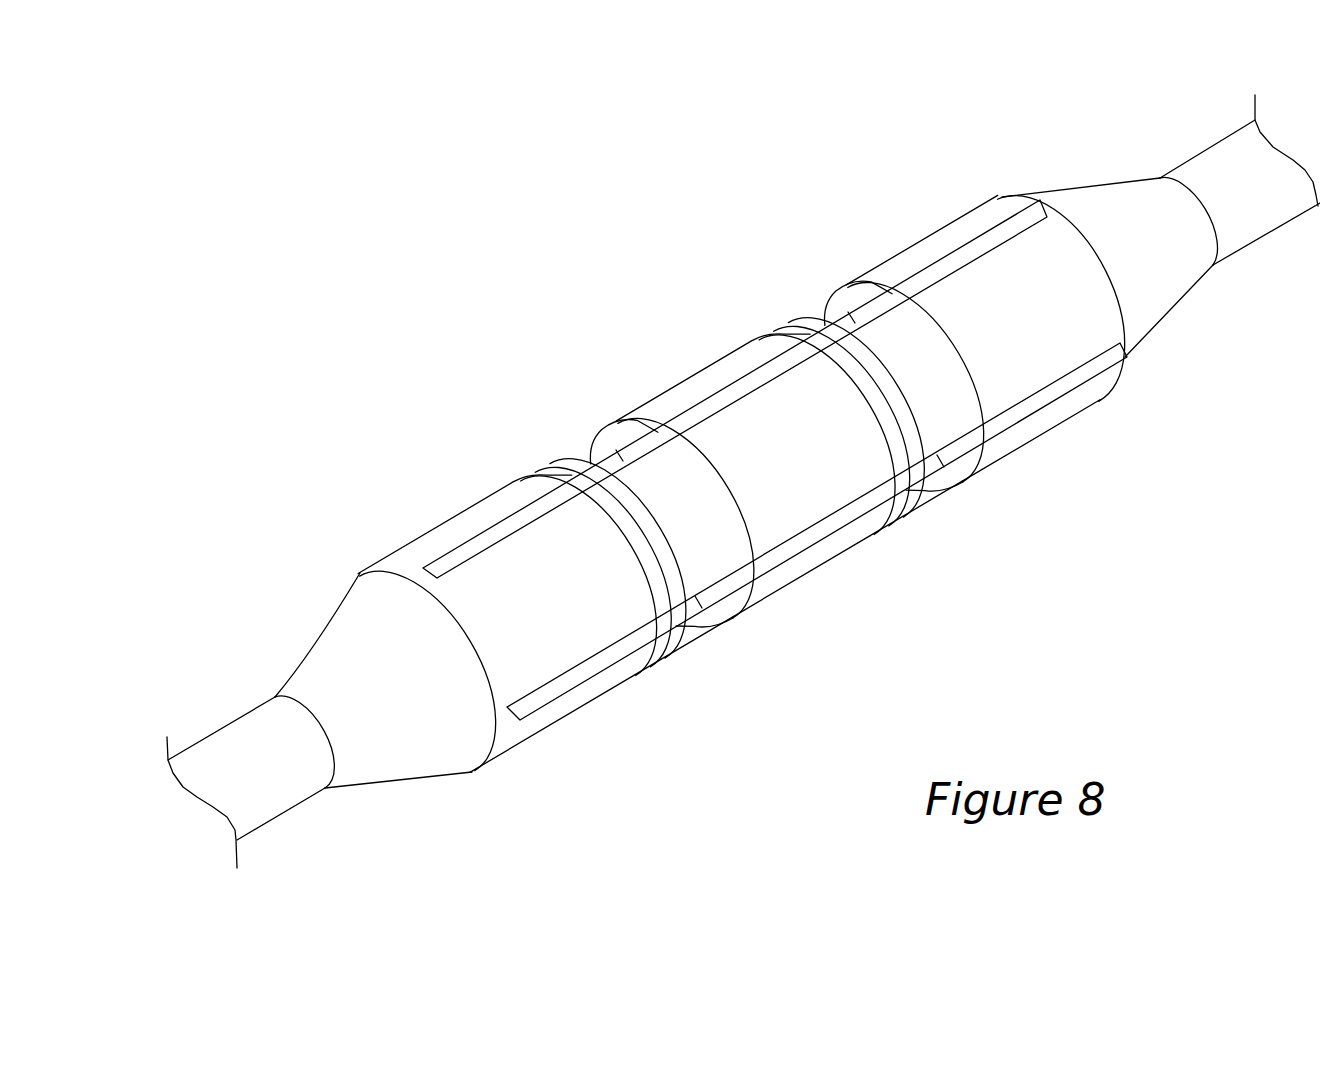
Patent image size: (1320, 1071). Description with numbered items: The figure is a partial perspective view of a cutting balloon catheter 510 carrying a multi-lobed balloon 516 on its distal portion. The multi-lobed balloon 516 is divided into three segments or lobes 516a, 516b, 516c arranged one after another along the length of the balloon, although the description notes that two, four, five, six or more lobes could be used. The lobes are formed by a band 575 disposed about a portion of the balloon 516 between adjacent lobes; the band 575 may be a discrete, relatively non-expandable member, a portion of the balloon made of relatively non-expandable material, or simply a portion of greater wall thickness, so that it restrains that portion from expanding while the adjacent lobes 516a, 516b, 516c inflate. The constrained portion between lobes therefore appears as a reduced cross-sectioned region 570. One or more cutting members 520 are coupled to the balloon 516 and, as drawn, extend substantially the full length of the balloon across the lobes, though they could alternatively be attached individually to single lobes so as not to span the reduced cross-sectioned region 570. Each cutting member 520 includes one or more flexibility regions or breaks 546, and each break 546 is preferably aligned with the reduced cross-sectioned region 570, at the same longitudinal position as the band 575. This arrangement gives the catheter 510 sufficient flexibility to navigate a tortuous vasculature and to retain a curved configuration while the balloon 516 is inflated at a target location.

The catheter 510 is at (743, 481).
The multi-lobed balloon 516 is at (745, 463).
The lobe 516a is at (512, 565).
The lobe 516b is at (743, 417).
The lobe 516c is at (990, 277).
The cutting member 520 is at (530, 512).
The break 546 is at (620, 468).
The reduced cross-sectioned region 570 is at (683, 658).
The band 575 is at (670, 582).